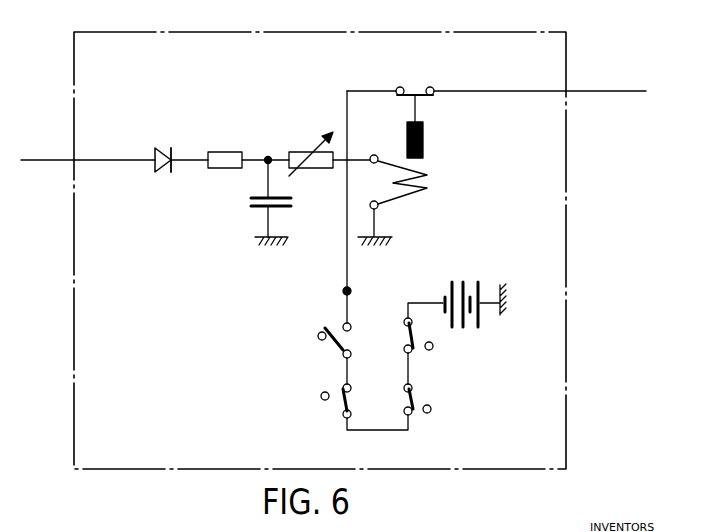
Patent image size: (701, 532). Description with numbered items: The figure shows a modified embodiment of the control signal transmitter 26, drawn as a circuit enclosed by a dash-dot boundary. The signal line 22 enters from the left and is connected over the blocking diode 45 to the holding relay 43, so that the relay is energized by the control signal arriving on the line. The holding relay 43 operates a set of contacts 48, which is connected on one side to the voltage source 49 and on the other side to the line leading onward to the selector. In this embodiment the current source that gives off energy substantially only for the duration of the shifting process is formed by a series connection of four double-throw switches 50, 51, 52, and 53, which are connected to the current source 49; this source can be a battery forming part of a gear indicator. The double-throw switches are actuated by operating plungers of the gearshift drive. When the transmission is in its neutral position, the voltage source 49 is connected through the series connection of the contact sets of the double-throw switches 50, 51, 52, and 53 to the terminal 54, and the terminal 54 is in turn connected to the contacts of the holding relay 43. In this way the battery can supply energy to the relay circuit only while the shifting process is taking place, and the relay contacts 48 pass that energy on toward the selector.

The signal line 22 is at (43, 158).
The control signal transmitter 26 is at (567, 195).
The holding relay 43 is at (412, 200).
The blocking diode 45 is at (167, 147).
The set of contacts 48 is at (417, 85).
The voltage source 49 is at (470, 322).
The double-throw switch 50 is at (422, 348).
The double-throw switch 51 is at (420, 417).
The double-throw switch 52 is at (338, 402).
The double-throw switch 53 is at (333, 345).
The terminal 54 is at (343, 291).